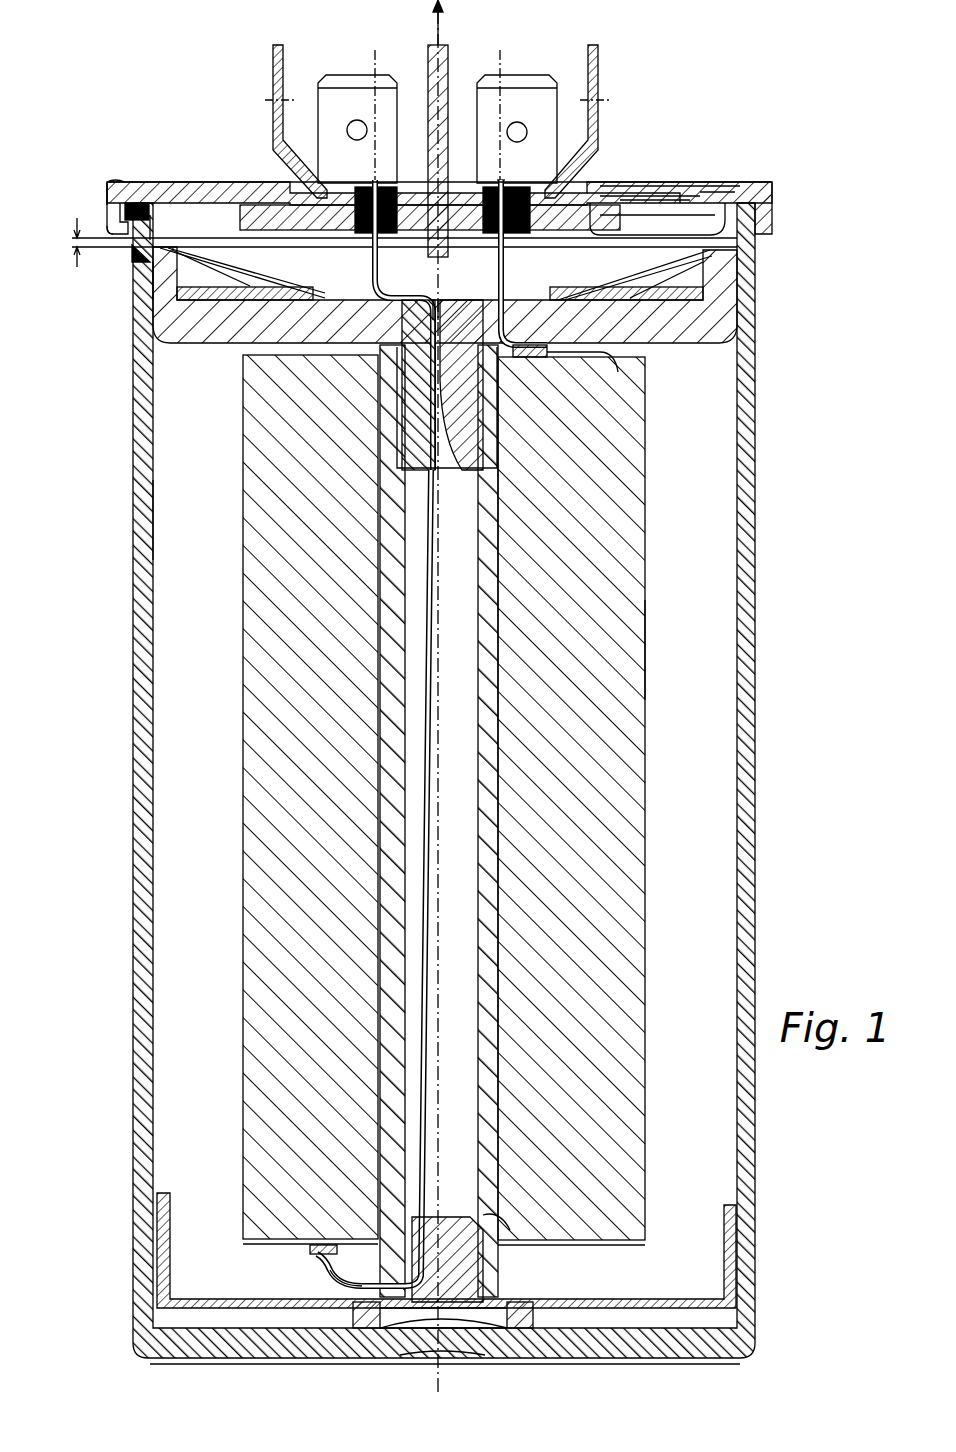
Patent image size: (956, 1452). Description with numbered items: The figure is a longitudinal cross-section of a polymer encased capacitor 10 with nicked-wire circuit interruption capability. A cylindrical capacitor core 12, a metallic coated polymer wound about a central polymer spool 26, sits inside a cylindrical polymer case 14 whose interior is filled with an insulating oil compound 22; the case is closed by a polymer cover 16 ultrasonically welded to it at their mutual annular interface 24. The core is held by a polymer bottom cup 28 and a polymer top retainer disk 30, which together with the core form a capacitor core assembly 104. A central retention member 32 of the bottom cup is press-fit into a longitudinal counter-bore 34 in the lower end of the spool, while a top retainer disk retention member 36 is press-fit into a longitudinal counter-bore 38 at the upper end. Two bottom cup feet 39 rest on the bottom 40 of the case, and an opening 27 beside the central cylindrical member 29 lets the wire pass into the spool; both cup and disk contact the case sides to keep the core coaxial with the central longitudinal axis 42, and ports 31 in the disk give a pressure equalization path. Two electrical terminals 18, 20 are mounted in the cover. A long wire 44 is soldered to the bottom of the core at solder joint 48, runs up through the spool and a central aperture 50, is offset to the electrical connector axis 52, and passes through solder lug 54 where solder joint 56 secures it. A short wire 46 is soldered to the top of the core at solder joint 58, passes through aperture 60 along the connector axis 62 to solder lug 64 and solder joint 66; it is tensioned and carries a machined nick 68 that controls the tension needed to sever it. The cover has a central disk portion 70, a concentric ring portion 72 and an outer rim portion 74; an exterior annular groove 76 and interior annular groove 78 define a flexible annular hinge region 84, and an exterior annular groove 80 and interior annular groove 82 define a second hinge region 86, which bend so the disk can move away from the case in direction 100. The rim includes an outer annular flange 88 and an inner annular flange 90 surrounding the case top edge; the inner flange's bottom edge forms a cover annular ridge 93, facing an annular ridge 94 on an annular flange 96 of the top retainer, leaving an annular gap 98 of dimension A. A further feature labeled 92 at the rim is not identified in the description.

The polymer encased capacitor 10 is at (768, 160).
The capacitor core 12 is at (643, 760).
The polymer case 14 is at (755, 647).
The polymer cover 16 is at (730, 196).
The electrical terminal 18 is at (332, 92).
The electrical terminal 20 is at (525, 100).
The insulating oil compound 22 is at (735, 520).
The annular interface 24 is at (135, 196).
The central polymer spool 26 is at (396, 878).
The opening 27 is at (308, 1250).
The polymer bottom cup 28 is at (585, 1300).
The central cylindrical member 29 is at (490, 1284).
The polymer top retainer disk 30 is at (680, 343).
The ports 31 is at (310, 288).
The central retention member 32 is at (455, 1215).
The longitudinal counter-bore 34 is at (505, 1218).
The top retainer disk retention member 36 is at (468, 470).
The longitudinal counter-bore 38 is at (408, 466).
The bottom cup feet 39 is at (355, 1316).
The bottom of case 40 is at (630, 1328).
The central longitudinal axis 42 is at (438, 1376).
The long wire 44 is at (372, 276).
The short wire 46 is at (515, 272).
The solder joint 48 is at (322, 1262).
The central aperture 50 is at (458, 300).
The electrical connector axis 52 is at (375, 70).
The solder lug 54 is at (417, 180).
The solder joint 56 is at (360, 186).
The solder joint 58 is at (618, 375).
The aperture 60 is at (445, 320).
The electrical connector axis 62 is at (500, 62).
The solder lug 64 is at (515, 188).
The solder joint 66 is at (462, 185).
The machined nick 68 is at (510, 300).
The central disk portion 70 is at (280, 215).
The concentric ring portion 72 is at (242, 205).
The concentric outer rim portion 74 is at (115, 182).
The exterior annular groove 76 is at (610, 203).
The interior annular groove 78 is at (635, 208).
The exterior annular groove 80 is at (650, 198).
The interior annular groove 82 is at (660, 206).
The flexible annular hinge region 84 is at (630, 198).
The flexible annular hinge region 86 is at (690, 198).
The outer annular flange 88 is at (107, 212).
The inner annular flange 90 is at (160, 223).
The rolled edge 92 is at (107, 188).
The cover annular ridge 93 is at (210, 246).
The annular ridge 94 is at (132, 248).
The annular flange 96 is at (150, 270).
The annular gap 98 is at (240, 248).
The direction 100 is at (443, 16).
The capacitor core assembly 104 is at (652, 646).